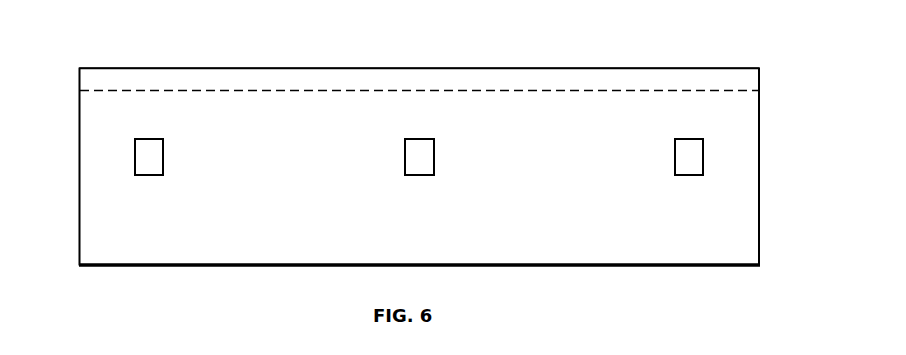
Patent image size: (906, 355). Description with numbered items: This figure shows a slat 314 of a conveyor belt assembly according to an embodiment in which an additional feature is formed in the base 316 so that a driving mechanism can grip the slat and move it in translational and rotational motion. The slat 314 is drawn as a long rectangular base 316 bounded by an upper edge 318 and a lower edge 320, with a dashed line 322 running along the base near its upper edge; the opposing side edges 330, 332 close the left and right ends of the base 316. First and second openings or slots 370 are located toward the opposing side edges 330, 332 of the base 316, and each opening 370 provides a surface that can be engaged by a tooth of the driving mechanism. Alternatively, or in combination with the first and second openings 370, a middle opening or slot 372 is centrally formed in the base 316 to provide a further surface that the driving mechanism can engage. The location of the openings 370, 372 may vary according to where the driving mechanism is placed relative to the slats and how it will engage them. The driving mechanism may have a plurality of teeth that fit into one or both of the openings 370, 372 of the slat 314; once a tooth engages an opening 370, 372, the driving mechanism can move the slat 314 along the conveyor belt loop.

The slat 314 is at (777, 211).
The base 316 is at (555, 225).
The top edge 318 is at (585, 68).
The bottom edge 320 is at (705, 266).
The boundary line 322 is at (79, 83).
The side edge 330 is at (79, 130).
The side edge 332 is at (760, 120).
The first and second openings or slots 370 is at (149, 139).
The middle opening or slot 372 is at (420, 139).